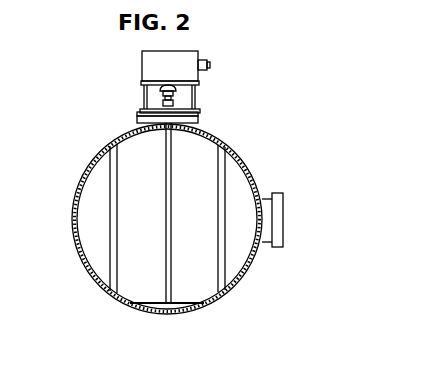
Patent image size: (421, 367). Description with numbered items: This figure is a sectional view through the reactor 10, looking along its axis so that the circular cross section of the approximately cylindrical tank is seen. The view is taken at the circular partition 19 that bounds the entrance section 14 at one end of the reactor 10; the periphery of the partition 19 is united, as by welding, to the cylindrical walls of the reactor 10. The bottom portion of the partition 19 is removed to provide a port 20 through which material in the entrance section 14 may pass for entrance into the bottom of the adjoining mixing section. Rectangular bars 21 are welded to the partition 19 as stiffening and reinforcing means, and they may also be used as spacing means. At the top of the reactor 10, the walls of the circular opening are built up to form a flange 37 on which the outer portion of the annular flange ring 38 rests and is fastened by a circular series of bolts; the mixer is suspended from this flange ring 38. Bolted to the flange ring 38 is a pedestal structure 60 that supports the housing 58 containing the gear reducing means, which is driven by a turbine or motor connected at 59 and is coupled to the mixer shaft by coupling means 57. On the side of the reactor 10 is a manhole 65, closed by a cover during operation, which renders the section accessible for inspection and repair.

The reactor 10 is at (251, 166).
The entrance section 14 is at (95, 218).
The circular partition 19 is at (150, 249).
The port 20 is at (168, 306).
The rectangular bars 21 is at (117, 186).
The flange 37 is at (203, 121).
The annular flange ring 38 is at (203, 112).
The coupling means 57 is at (160, 92).
The housing 58 is at (140, 70).
The gear reducing means connection 59 is at (208, 58).
The pedestal structure 60 is at (199, 86).
The manhole 65 is at (277, 208).